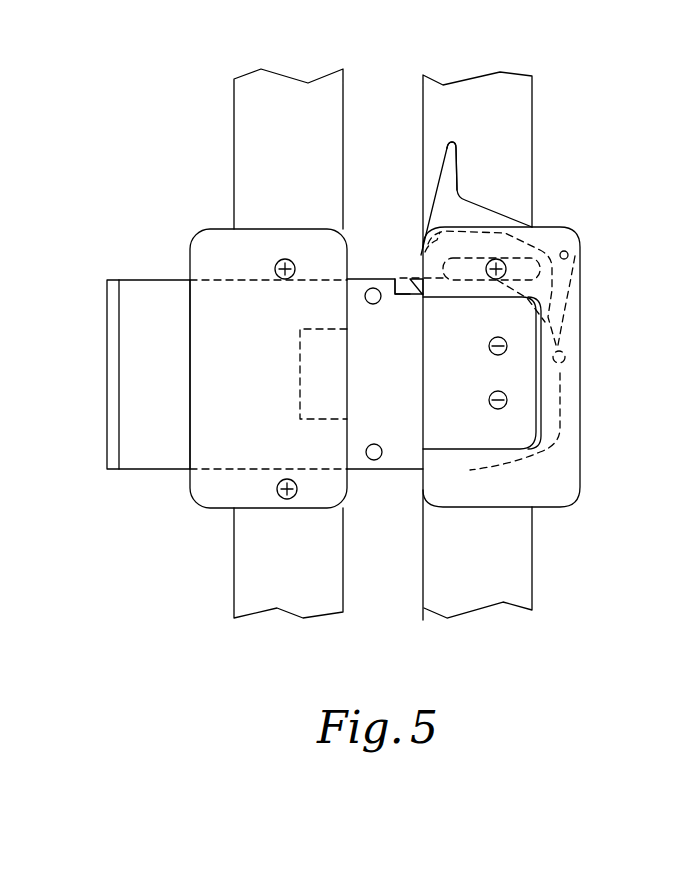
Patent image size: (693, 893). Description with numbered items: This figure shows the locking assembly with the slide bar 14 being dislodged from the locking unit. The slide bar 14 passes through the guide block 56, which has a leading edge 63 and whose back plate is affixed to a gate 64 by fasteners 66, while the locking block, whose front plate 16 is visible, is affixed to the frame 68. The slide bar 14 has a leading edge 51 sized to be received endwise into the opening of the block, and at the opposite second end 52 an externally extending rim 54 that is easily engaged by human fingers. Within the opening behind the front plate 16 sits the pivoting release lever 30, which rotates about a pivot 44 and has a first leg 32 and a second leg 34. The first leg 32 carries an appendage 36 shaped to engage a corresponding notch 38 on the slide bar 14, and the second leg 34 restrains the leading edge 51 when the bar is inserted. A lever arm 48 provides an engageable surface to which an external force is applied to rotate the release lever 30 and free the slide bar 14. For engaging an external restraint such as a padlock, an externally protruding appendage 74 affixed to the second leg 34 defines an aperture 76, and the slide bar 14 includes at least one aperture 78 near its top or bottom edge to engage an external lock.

The slide bar 14 is at (404, 455).
The front plate 16 is at (565, 477).
The pivoting release lever 30 is at (493, 213).
The first leg 32 is at (442, 210).
The second leg 34 is at (583, 310).
The appendage 36 is at (420, 247).
The notch 38 is at (408, 296).
The pivot 44 is at (570, 255).
The lever arm 48 is at (455, 178).
The leading edge 51 is at (540, 412).
The second end 52 is at (84, 377).
The externally extending rim 54 is at (108, 460).
The guide block 56 is at (202, 240).
The leading edge 63 is at (352, 435).
The gate 64 is at (248, 123).
The fasteners 66 is at (284, 280).
The frame 68 is at (520, 117).
The externally protruding appendage 74 is at (552, 370).
The aperture 76 is at (577, 347).
The aperture 78 is at (372, 305).